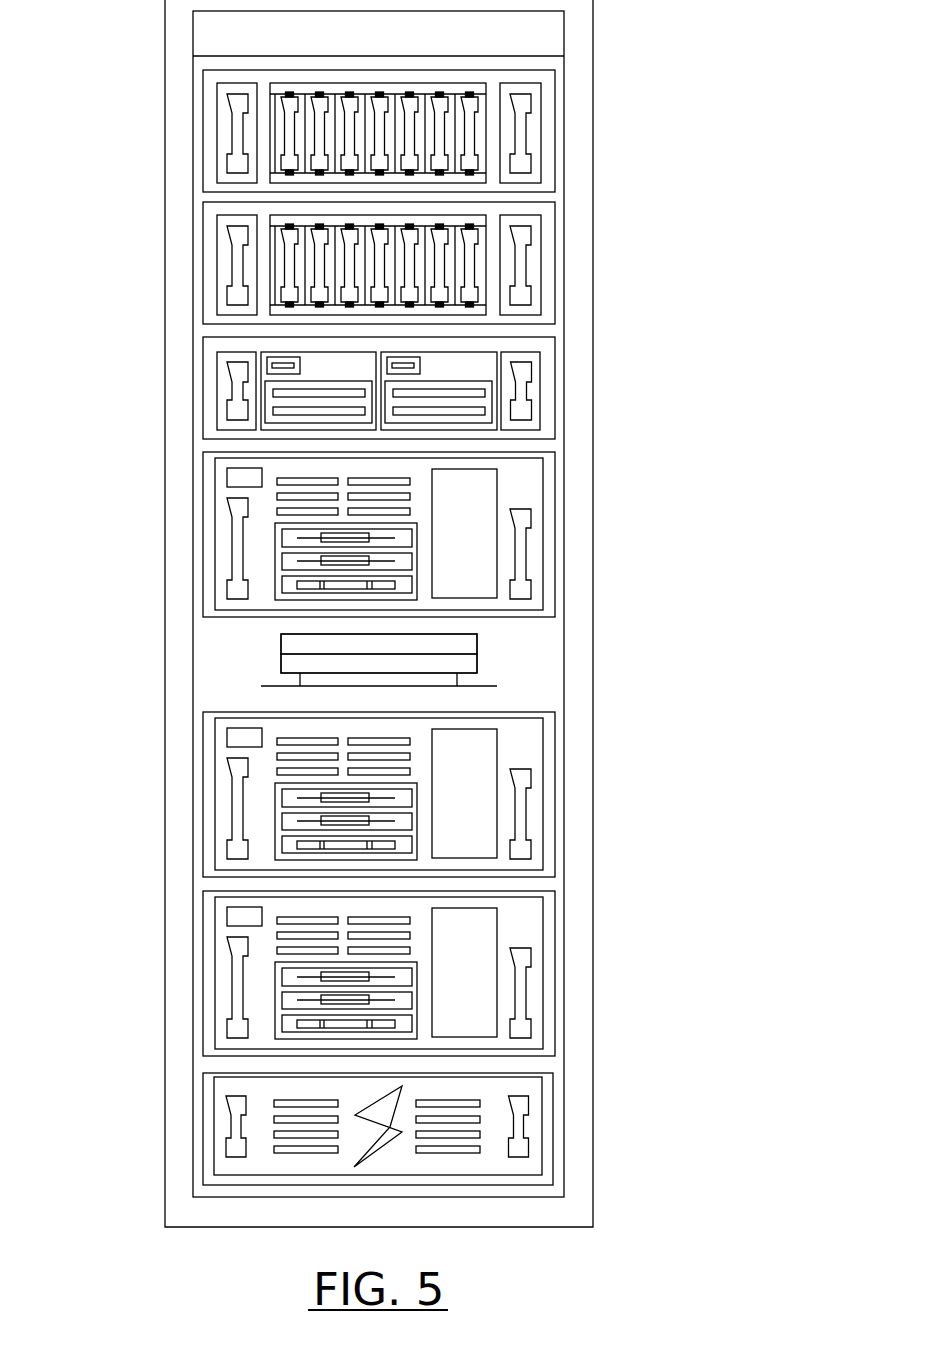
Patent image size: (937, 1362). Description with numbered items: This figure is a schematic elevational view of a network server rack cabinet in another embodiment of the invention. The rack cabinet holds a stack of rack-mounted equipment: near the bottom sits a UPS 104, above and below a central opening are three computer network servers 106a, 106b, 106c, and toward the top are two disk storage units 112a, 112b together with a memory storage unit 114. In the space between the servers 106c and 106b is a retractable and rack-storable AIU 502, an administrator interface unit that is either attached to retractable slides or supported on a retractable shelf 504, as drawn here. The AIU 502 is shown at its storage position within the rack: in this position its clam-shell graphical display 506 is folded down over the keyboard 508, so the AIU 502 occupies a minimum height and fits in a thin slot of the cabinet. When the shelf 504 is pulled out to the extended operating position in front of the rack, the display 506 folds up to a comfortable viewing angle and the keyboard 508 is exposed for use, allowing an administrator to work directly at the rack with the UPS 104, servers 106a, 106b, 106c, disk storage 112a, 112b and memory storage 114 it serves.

The UPS 104 is at (527, 1137).
The computer network server 106a is at (522, 937).
The computer network server 106b is at (523, 753).
The computer network server 106c is at (523, 494).
The disk storage 112a is at (533, 235).
The disk storage 112b is at (533, 100).
The memory storage 114 is at (534, 365).
The AIU 502 is at (477, 662).
The retractable shelf 504 is at (263, 687).
The clam-shell graphical display 506 is at (464, 645).
The keyboard 508 is at (297, 665).